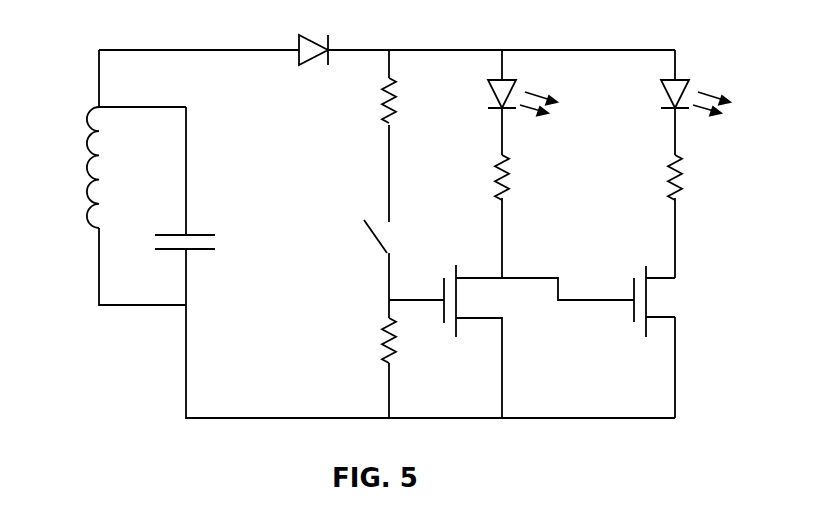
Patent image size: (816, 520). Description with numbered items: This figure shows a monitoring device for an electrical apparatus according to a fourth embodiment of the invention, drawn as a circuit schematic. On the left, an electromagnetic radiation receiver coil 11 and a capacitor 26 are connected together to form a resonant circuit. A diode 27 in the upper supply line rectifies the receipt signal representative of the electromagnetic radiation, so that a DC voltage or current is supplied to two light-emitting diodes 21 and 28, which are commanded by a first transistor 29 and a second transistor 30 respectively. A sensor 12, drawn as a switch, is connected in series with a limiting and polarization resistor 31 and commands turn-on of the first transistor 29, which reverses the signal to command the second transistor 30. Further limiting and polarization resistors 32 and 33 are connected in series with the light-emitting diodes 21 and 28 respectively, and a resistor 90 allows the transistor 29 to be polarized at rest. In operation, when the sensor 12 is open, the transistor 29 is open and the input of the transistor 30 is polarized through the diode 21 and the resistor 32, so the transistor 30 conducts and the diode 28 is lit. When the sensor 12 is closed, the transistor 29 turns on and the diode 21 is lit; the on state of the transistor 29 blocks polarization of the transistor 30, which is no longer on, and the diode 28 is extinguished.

The electromagnetic radiation receiver coil 11 is at (88, 177).
The capacitor 26 is at (199, 238).
The diode 27 is at (298, 66).
The limiting and polarization resistor 31 is at (380, 100).
The sensor 12 is at (377, 245).
The resistor 90 is at (380, 340).
The first transistor 29 is at (452, 263).
The light-emitting diode 21 is at (490, 90).
The limiting and polarization resistor 32 is at (512, 172).
The light-emitting diode 28 is at (663, 90).
The limiting and polarization resistor 33 is at (681, 170).
The second transistor 30 is at (644, 327).